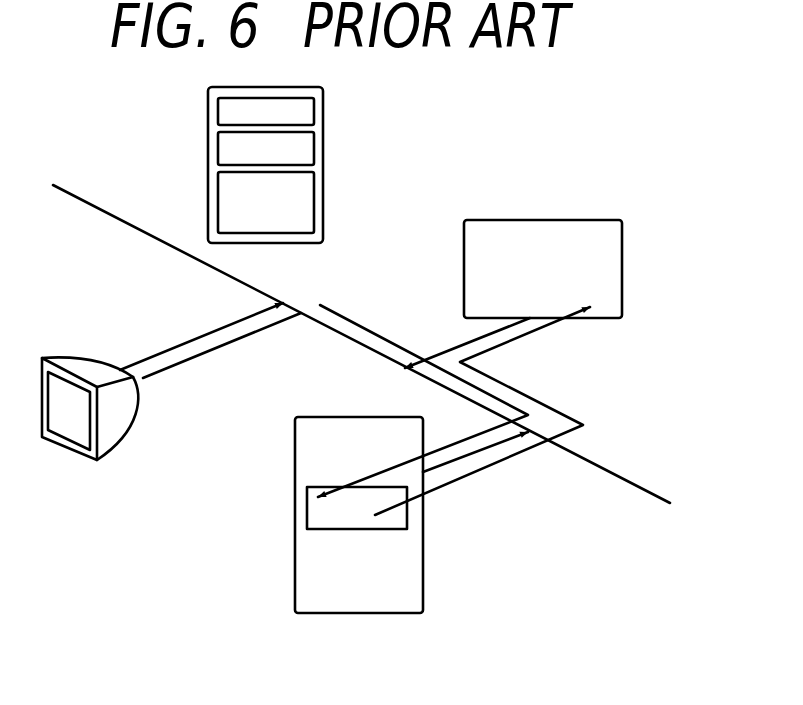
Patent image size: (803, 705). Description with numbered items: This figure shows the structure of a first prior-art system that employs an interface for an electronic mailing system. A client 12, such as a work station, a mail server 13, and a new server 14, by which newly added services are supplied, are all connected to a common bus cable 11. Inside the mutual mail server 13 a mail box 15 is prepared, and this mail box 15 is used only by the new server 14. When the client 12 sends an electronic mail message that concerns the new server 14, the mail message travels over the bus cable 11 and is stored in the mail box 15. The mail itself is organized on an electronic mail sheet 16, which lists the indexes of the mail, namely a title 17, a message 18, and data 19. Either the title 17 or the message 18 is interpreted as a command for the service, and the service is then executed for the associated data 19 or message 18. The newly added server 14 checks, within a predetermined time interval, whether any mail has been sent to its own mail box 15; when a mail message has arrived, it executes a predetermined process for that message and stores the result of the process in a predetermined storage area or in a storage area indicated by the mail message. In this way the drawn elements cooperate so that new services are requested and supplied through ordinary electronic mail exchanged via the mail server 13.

The bus cable 11 is at (166, 248).
The client 12 is at (139, 405).
The mail server 13 is at (330, 415).
The new server 14 is at (622, 257).
The mail box 15 is at (406, 512).
The electronic mail sheet 16 is at (263, 159).
The title 17 is at (218, 112).
The message 18 is at (218, 150).
The data 19 is at (218, 193).